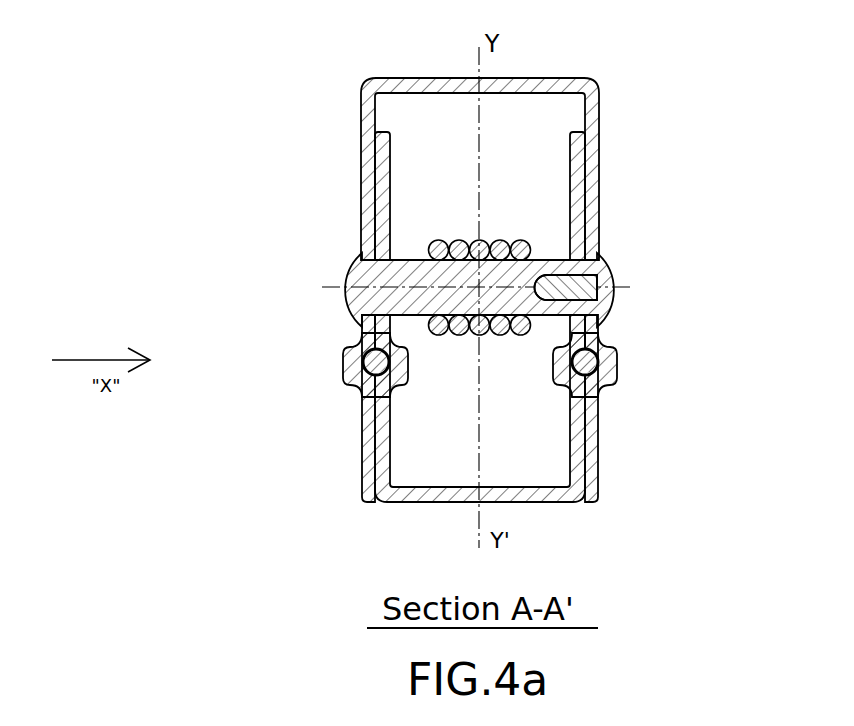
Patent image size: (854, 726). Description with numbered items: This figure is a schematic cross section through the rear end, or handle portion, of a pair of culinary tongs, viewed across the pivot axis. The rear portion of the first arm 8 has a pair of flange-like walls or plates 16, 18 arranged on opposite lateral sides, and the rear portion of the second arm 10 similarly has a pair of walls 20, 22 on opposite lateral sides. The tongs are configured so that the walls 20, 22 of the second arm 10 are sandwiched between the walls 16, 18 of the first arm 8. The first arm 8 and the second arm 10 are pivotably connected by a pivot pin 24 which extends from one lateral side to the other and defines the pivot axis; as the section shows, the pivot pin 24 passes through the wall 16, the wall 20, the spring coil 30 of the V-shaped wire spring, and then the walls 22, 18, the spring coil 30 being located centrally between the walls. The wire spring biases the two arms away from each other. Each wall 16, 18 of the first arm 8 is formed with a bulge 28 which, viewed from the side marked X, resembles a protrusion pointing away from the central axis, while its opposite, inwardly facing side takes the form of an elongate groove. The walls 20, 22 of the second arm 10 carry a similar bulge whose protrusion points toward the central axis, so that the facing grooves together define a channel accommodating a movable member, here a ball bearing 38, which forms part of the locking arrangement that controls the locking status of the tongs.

The first arm 8 is at (518, 90).
The second arm 10 is at (542, 500).
The wall 16 is at (368, 465).
The wall 18 is at (595, 460).
The wall 20 is at (382, 150).
The wall 22 is at (585, 165).
The pivot pin 24 is at (357, 283).
The bulge 28 is at (352, 388).
The spring coil 30 is at (530, 245).
The ball bearing 38 is at (350, 363).